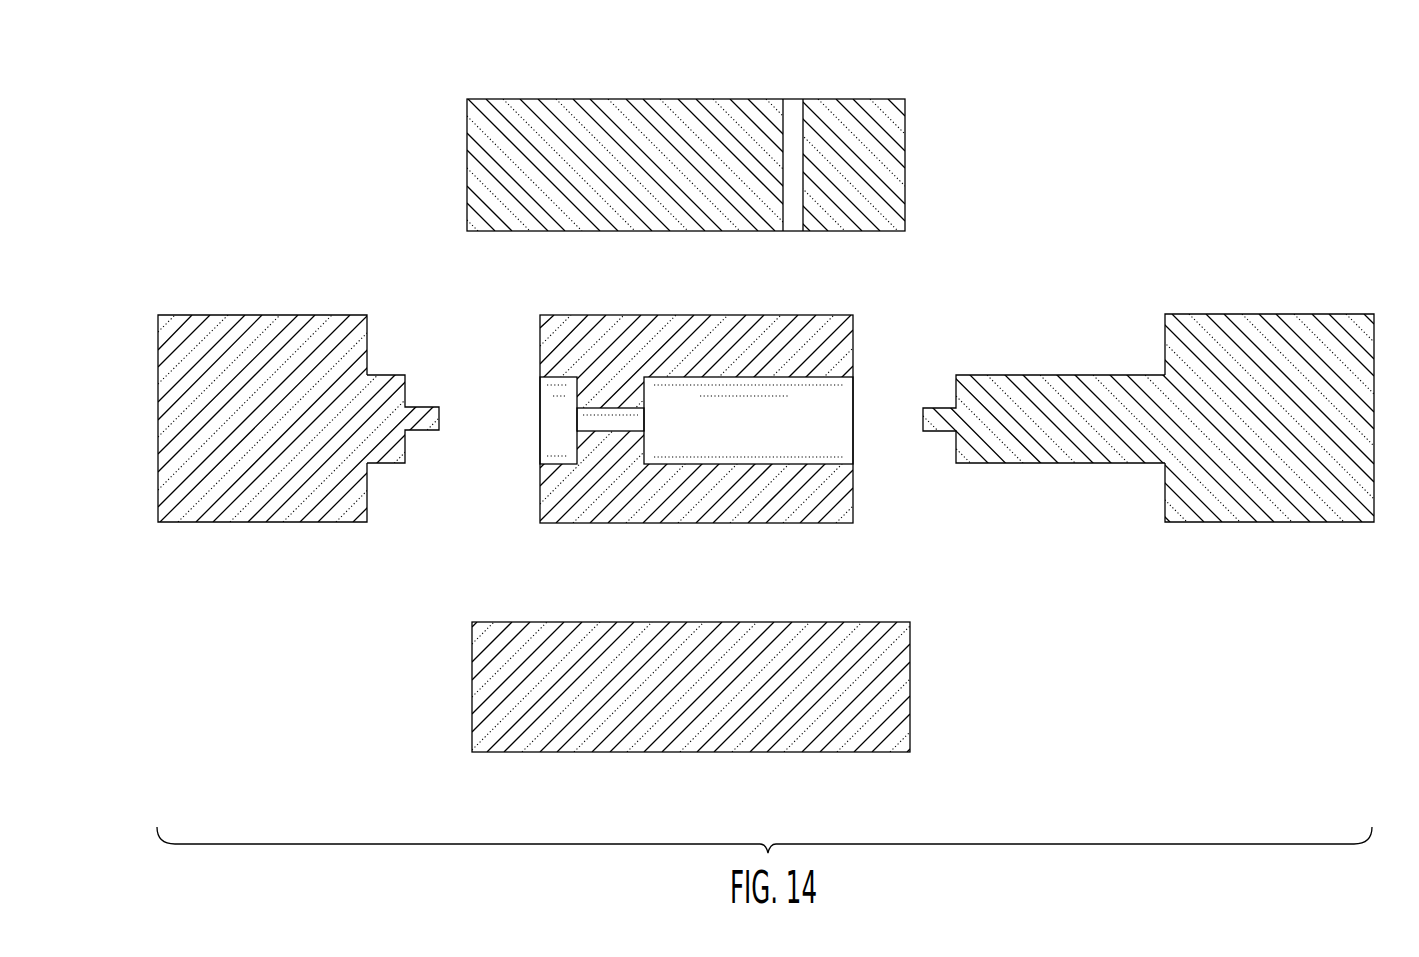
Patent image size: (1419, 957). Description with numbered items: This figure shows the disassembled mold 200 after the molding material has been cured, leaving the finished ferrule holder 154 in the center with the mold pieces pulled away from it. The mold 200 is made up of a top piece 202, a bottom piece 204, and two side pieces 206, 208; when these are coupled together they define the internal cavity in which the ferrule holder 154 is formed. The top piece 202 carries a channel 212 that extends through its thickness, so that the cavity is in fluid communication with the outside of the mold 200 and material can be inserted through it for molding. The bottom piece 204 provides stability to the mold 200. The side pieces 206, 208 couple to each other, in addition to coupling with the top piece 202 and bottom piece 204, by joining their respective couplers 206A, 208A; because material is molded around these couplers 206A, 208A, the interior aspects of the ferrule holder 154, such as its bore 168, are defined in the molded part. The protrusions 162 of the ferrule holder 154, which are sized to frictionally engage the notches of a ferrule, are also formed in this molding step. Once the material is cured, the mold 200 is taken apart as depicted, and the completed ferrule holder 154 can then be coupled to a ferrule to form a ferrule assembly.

The mold 200 is at (205, 235).
The top piece 202 is at (613, 120).
The bottom piece 204 is at (862, 686).
The side piece 206 is at (200, 470).
The coupler 206A is at (385, 397).
The side piece 208 is at (1258, 343).
The coupler 208A is at (1032, 403).
The channel 212 is at (813, 88).
The ferrule holder 154 is at (822, 342).
The protrusion 162 is at (623, 382).
The bore 168 is at (742, 448).